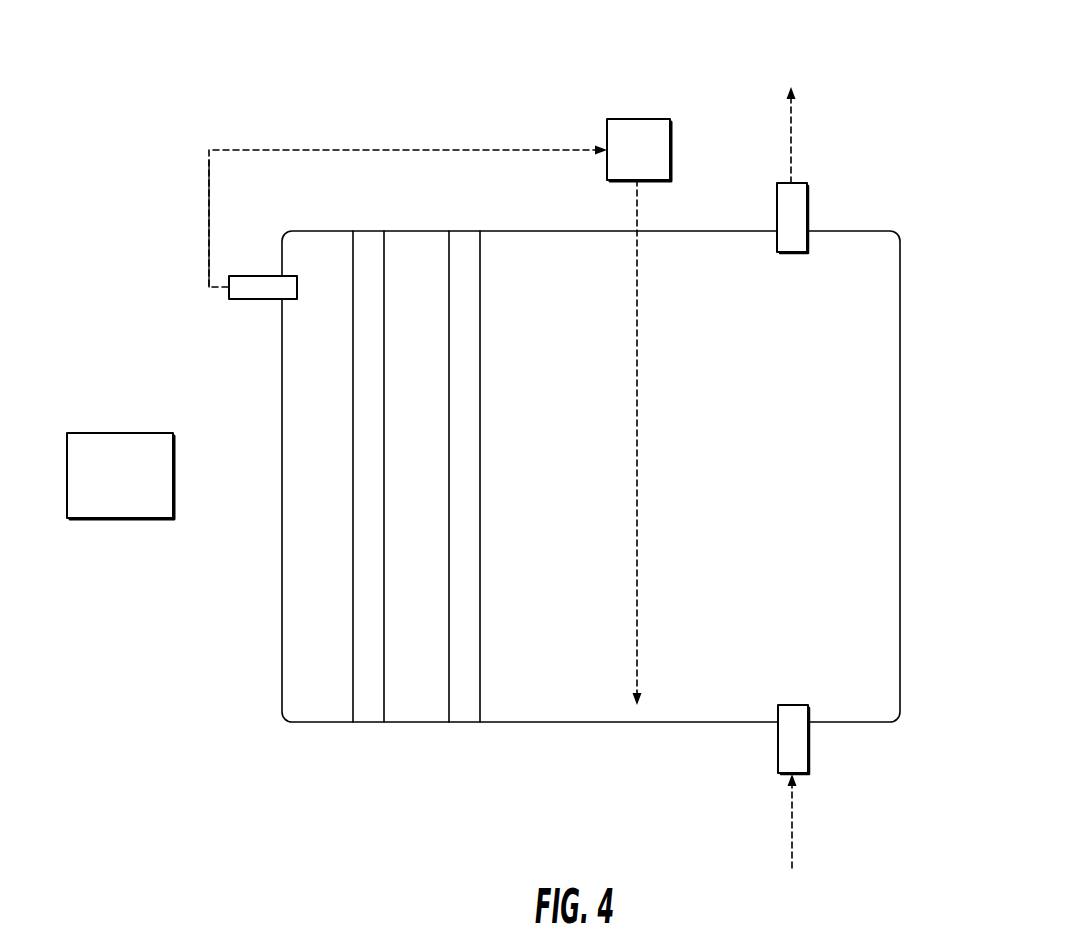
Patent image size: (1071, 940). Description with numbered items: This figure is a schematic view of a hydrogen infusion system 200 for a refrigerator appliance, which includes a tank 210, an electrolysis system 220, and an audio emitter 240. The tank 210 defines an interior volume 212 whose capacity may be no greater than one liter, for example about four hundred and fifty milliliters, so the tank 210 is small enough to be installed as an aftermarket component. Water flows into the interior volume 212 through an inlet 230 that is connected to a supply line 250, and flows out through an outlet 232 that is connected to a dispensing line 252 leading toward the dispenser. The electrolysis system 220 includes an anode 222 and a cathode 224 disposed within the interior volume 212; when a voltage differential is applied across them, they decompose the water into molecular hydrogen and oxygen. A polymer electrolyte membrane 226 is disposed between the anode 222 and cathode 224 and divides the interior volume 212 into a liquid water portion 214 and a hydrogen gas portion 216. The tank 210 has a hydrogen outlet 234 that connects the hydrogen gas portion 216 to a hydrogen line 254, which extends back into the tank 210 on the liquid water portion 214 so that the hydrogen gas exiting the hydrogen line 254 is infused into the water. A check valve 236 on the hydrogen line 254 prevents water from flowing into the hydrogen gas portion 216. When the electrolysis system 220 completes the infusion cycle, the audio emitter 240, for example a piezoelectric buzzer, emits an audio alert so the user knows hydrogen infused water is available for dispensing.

The hydrogen infusion system 200 is at (156, 58).
The tank 210 is at (900, 306).
The interior volume 212 is at (549, 275).
The liquid water portion 214 is at (853, 609).
The hydrogen gas portion 216 is at (322, 597).
The electrolysis system 220 is at (502, 486).
The anode 222 is at (466, 708).
The cathode 224 is at (369, 708).
The polymer electrolyte membrane 226 is at (416, 705).
The inlet 230 is at (808, 742).
The outlet 232 is at (808, 213).
The hydrogen outlet 234 is at (243, 300).
The check valve 236 is at (642, 119).
The audio emitter 240 is at (140, 488).
The supply line 250 is at (792, 817).
The dispensing line 252 is at (793, 138).
The hydrogen line 254 is at (353, 149).